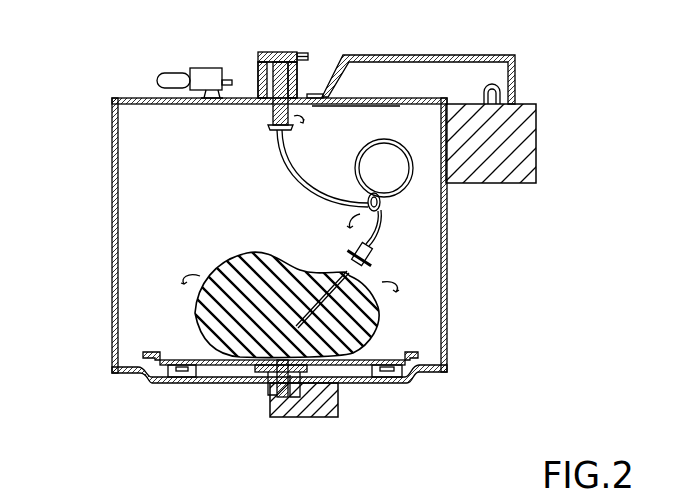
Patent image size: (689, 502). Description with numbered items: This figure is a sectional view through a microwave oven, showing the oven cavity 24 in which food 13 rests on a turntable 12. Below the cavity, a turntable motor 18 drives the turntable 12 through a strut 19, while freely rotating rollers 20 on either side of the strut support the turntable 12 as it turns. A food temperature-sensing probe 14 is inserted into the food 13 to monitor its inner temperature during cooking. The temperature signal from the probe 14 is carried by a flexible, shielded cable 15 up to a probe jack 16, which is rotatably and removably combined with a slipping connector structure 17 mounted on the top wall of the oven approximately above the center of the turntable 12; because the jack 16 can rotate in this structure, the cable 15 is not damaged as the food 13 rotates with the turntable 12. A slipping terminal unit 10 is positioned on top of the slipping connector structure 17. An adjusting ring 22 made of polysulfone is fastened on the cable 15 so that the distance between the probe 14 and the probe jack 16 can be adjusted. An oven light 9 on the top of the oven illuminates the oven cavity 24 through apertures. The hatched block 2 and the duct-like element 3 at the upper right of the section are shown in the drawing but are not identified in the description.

The heating block 2 is at (535, 134).
The duct 3 is at (452, 56).
The oven light 9 is at (200, 68).
The slipping terminal unit 10 is at (276, 53).
The turntable 12 is at (150, 352).
The food 13 is at (226, 258).
The food temperature-sensing probe 14 is at (380, 303).
The flexible, shielded cable 15 is at (408, 192).
The probe jack 16 is at (270, 83).
The slipping connector structure 17 is at (300, 84).
The turntable motor 18 is at (338, 408).
The strut 19 is at (268, 395).
The freely rotating rollers 20 is at (175, 384).
The adjusting ring 22 is at (380, 213).
The oven cavity 24 is at (135, 143).